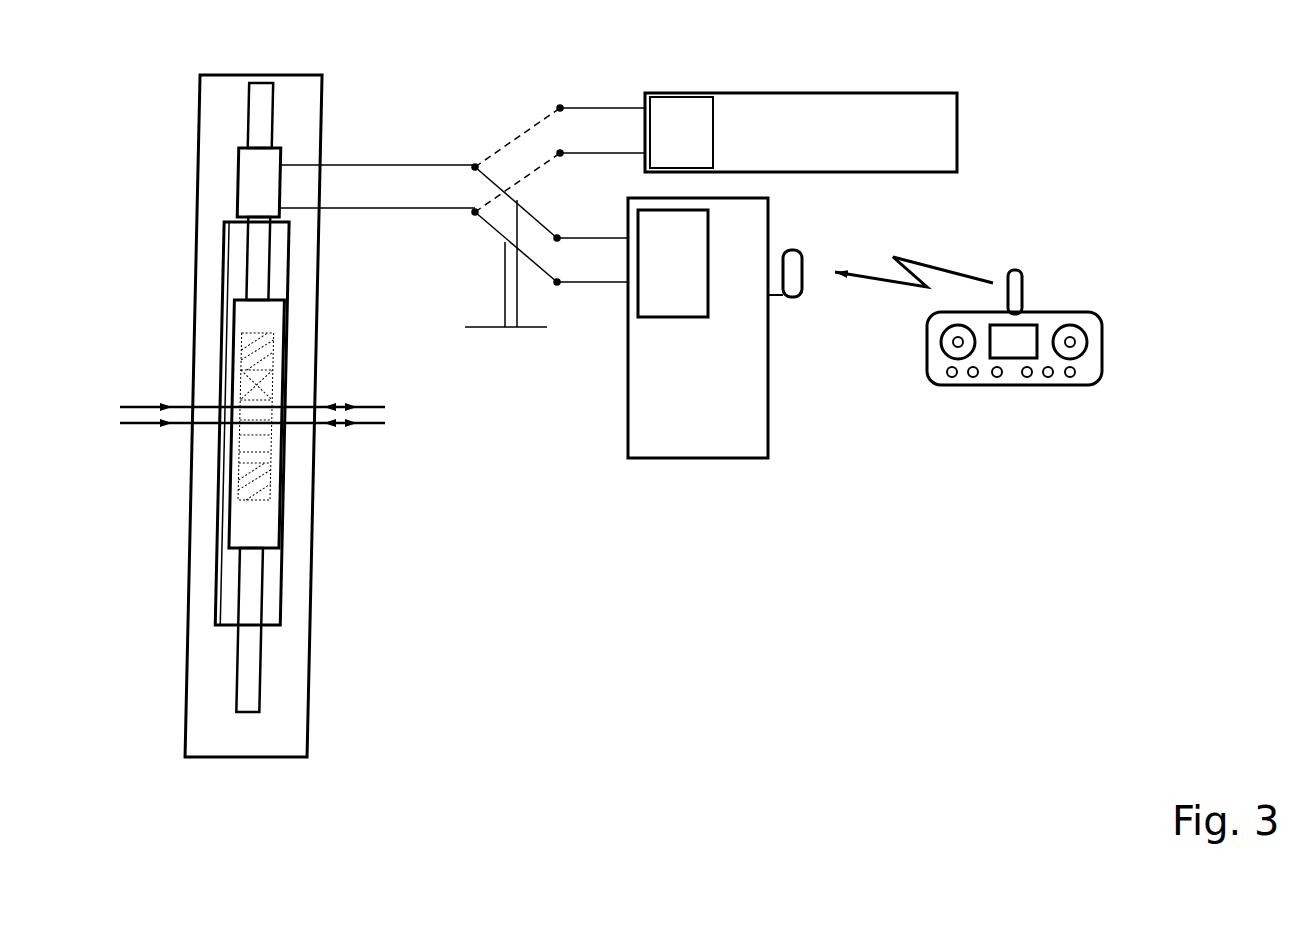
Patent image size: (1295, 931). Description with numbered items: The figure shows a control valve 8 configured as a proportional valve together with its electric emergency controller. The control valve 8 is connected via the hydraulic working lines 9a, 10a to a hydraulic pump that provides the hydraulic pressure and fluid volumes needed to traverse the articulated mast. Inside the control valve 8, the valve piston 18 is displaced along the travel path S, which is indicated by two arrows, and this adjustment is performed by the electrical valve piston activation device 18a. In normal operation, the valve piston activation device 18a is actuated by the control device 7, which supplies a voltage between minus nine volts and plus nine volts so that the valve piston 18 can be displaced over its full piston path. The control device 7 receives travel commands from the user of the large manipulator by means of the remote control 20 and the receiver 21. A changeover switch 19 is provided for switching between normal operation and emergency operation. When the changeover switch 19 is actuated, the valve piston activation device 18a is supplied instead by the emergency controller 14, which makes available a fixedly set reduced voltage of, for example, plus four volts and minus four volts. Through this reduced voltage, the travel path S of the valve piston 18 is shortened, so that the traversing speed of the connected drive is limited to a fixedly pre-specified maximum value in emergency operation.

The control valve 8 is at (193, 143).
The emergency controller 14 is at (848, 132).
The valve piston activation device 18a is at (263, 183).
The travel path S is at (238, 267).
The valve piston 18 is at (265, 318).
The hydraulic working line 9a is at (160, 400).
The hydraulic working line 10a is at (160, 433).
The changeover switch 19 is at (512, 330).
The control device 7 is at (690, 373).
The receiver 21 is at (797, 283).
The remote control 20 is at (1012, 373).